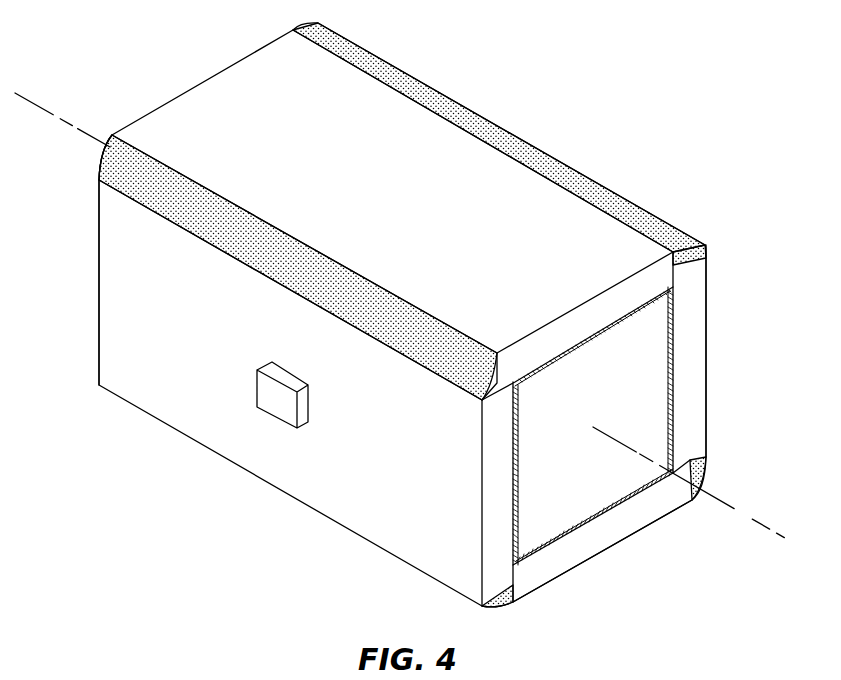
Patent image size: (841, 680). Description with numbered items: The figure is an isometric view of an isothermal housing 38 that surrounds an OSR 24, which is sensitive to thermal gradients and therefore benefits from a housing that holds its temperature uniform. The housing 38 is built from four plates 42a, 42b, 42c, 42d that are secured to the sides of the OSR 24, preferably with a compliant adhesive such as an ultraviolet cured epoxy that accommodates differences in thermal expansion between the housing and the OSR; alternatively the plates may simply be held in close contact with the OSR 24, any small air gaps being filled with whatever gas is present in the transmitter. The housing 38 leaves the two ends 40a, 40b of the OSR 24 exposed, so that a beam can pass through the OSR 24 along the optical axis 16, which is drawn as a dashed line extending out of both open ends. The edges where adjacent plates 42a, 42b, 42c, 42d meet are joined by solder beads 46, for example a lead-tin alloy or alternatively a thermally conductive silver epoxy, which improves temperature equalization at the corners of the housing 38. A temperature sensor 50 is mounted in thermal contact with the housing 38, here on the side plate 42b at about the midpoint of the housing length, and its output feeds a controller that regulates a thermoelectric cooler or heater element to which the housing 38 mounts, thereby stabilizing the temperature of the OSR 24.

The isothermal housing 38 is at (587, 113).
The end 40a is at (178, 57).
The end 40b is at (723, 408).
The plate 42a is at (392, 191).
The plate 42b is at (290, 393).
The plate 42c is at (600, 532).
The plate 42d is at (688, 362).
The solder beads 46 is at (383, 70).
The temperature sensor 50 is at (283, 378).
The OSR 24 is at (593, 426).
The optical axis 16 is at (737, 513).